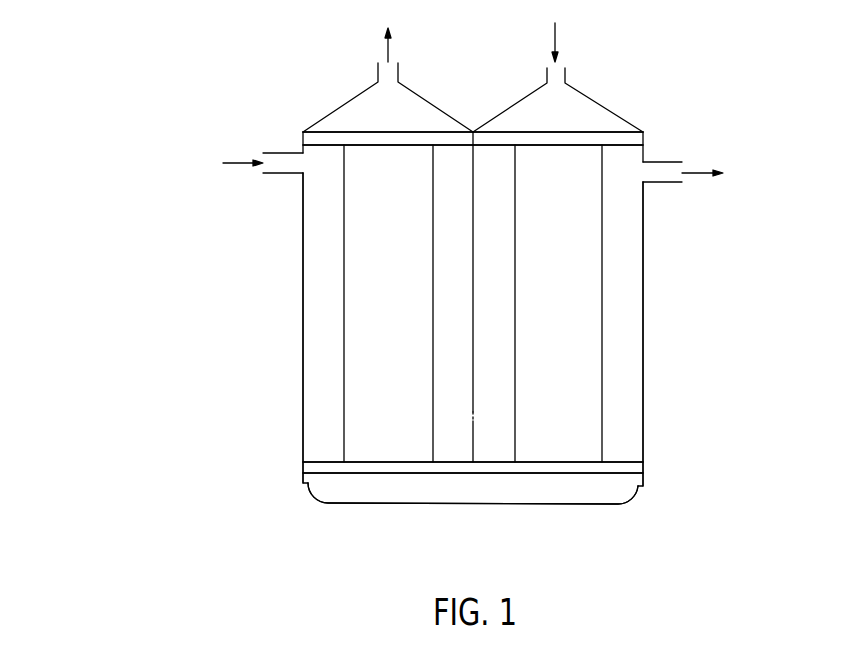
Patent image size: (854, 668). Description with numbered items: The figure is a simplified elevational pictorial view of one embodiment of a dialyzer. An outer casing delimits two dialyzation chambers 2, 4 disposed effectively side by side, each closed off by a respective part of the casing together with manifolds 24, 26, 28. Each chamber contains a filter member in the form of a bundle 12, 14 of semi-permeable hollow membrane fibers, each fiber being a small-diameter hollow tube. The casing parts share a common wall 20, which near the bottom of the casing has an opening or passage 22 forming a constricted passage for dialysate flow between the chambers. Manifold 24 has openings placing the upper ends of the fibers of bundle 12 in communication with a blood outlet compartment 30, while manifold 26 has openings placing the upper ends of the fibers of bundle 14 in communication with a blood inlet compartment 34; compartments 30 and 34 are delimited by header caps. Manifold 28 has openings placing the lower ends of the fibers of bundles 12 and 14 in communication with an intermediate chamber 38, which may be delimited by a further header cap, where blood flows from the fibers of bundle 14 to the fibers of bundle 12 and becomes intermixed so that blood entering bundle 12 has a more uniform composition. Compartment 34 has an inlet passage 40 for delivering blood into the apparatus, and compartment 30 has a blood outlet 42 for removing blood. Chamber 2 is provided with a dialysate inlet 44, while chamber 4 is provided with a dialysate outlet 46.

The dialyzation chamber 2 is at (283, 316).
The dialyzation chamber 4 is at (665, 322).
The bundle of semi-permeable hollow membrane fibers 12 is at (355, 387).
The bundle of semi-permeable hollow membrane fibers 14 is at (593, 392).
The common wall 20 is at (473, 250).
The opening or passage 22 is at (477, 412).
The manifold 24 is at (322, 143).
The manifold 26 is at (623, 143).
The manifold 28 is at (343, 467).
The blood outlet compartment 30 is at (424, 110).
The blood inlet compartment 34 is at (522, 110).
The intermediate chamber 38 is at (477, 490).
The inlet passage 40 is at (561, 68).
The blood outlet 42 is at (383, 67).
The dialysate inlet 44 is at (263, 155).
The dialysate outlet 46 is at (688, 165).